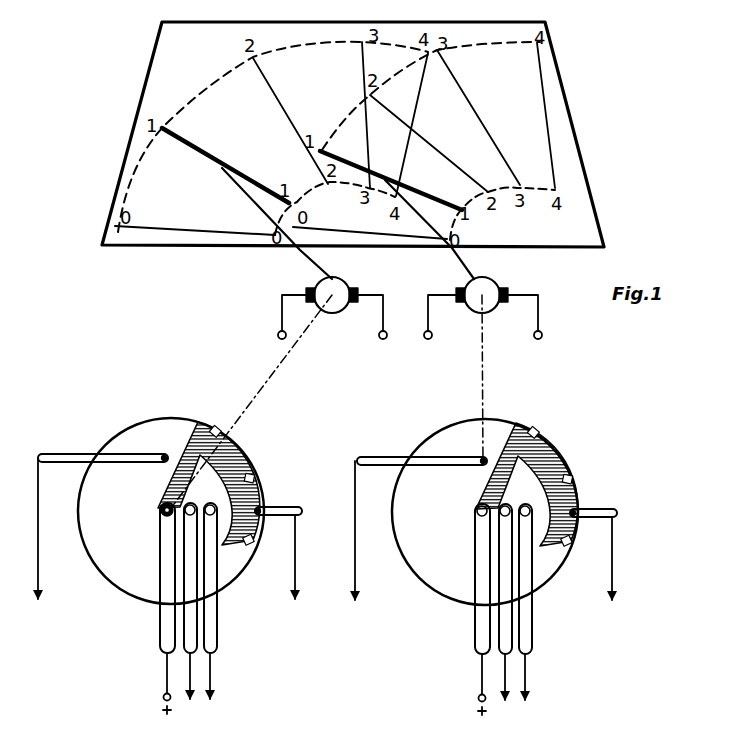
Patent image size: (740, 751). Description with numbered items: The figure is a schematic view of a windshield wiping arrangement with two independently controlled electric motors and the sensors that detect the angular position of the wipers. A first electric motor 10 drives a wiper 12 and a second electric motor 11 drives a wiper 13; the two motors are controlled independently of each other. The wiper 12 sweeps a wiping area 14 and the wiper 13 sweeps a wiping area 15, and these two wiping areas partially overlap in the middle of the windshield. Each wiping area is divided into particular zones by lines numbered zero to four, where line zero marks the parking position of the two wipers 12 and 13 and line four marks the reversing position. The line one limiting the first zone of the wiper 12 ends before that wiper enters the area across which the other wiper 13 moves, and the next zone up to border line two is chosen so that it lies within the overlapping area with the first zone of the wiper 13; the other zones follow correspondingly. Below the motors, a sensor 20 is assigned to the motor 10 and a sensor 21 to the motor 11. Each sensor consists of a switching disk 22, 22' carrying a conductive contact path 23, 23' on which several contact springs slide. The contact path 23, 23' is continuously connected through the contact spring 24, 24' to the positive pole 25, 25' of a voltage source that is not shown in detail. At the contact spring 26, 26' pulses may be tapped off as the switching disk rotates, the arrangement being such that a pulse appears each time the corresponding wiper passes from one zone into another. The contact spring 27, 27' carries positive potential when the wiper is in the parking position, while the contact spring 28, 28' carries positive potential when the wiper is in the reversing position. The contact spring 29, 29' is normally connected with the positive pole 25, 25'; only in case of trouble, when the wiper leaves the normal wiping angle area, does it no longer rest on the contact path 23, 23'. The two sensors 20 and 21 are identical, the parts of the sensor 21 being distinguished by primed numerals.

The electric motor 10 is at (338, 288).
The electric motor 11 is at (488, 288).
The wiper 12 is at (194, 155).
The wiper 13 is at (428, 197).
The wiping area 14 is at (252, 134).
The wiping area 15 is at (518, 114).
The sensor 20 is at (268, 423).
The sensor 21 is at (556, 422).
The switching disk 22 is at (162, 510).
The switching disk 22' is at (476, 511).
The contact path 23 is at (237, 483).
The contact path 23' is at (556, 480).
The contact spring 24 is at (148, 583).
The contact spring 24' is at (482, 579).
The positive pole 25 is at (152, 683).
The positive pole 25' is at (465, 684).
The contact spring 26 is at (289, 553).
The contact spring 26' is at (613, 554).
The contact spring 27 is at (103, 526).
The contact spring 27' is at (421, 528).
The contact spring 28 is at (212, 603).
The contact spring 28' is at (534, 604).
The contact spring 29 is at (195, 686).
The contact spring 29' is at (510, 688).